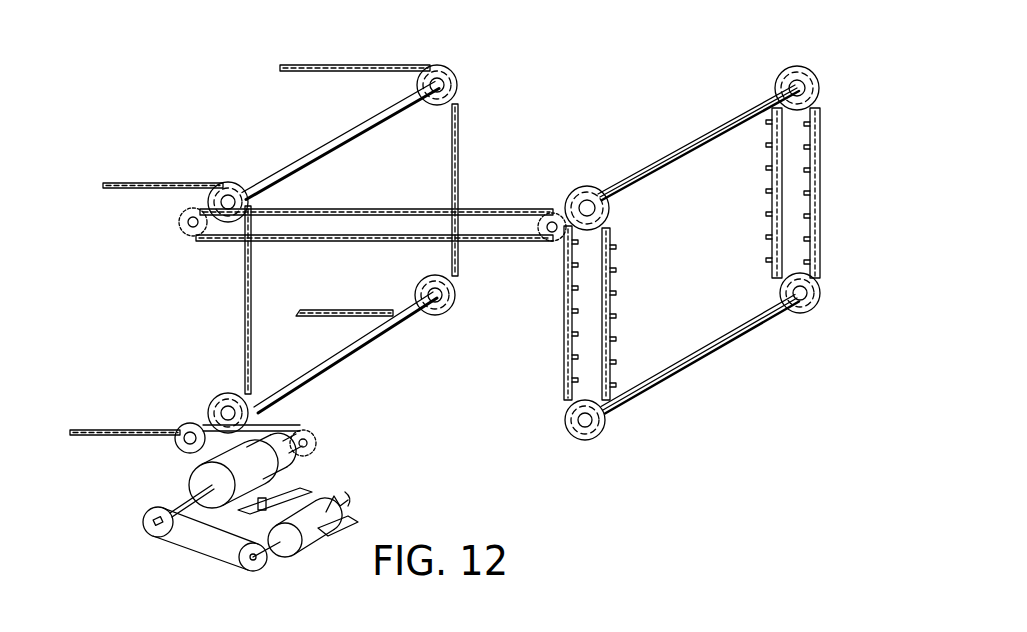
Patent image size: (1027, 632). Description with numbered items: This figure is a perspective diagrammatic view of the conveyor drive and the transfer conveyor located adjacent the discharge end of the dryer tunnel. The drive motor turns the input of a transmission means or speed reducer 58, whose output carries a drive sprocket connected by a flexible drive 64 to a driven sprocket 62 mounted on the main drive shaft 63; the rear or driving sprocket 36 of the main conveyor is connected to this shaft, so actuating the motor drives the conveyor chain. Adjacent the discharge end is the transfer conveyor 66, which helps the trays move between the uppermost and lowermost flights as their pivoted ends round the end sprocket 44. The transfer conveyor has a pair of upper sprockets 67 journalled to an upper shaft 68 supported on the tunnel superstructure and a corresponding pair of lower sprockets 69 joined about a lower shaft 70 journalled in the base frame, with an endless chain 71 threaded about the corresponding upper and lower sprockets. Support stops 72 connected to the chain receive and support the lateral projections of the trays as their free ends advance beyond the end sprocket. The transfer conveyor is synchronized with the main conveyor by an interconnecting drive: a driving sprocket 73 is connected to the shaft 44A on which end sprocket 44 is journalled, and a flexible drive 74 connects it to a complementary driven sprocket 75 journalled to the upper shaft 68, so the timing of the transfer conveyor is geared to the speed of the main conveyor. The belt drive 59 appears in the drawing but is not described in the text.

The rear or driving sprocket 36 is at (215, 405).
The end sprocket 44 is at (228, 182).
The shaft 44A is at (312, 147).
The transmission means or speed reducer 58 is at (287, 490).
The belt drive 59 is at (200, 553).
The driven sprocket 62 is at (178, 450).
The main drive shaft 63 is at (336, 360).
The flexible drive 64 is at (268, 415).
The transfer conveyor 66 is at (824, 78).
The upper sprockets 67 is at (588, 186).
The upper shaft 68 is at (664, 145).
The lower sprockets 69 is at (583, 432).
The lower shaft 70 is at (687, 365).
The endless chain 71 is at (612, 305).
The support stops 72 is at (612, 272).
The driving sprocket or pulley 73 is at (180, 226).
The flexible drive 74 is at (292, 243).
The driven sprocket or pulley 75 is at (548, 212).